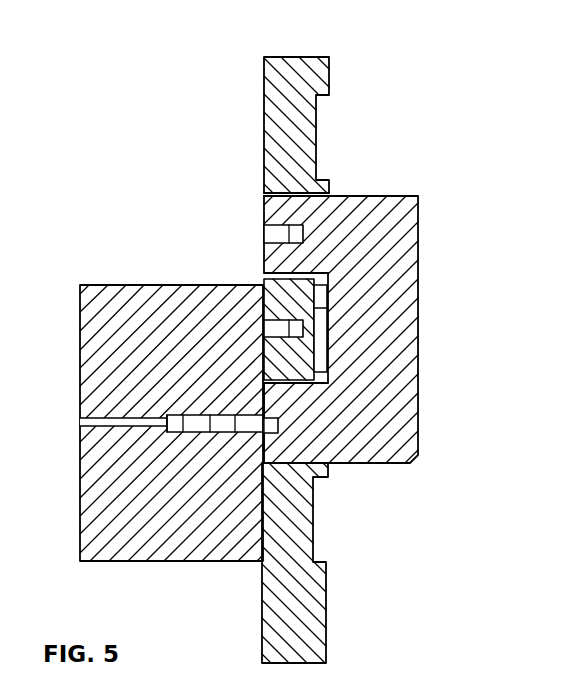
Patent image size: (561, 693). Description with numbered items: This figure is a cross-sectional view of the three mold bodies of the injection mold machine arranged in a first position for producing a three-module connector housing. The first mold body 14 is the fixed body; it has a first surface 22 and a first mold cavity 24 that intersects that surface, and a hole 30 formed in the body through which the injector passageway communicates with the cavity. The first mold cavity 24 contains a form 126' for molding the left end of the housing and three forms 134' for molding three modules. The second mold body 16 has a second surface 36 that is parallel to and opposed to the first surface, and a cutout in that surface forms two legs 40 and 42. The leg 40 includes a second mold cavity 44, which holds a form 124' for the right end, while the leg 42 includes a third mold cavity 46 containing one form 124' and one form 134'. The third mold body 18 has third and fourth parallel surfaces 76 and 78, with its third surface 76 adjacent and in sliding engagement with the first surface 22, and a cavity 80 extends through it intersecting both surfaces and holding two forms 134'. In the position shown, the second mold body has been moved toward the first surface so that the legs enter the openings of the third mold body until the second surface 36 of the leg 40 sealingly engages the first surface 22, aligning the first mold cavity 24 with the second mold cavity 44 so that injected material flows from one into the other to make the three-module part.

The first mold body 14 is at (80, 321).
The second mold body 16 is at (418, 240).
The third mold body 18 is at (313, 57).
The first surface 22 is at (262, 533).
The first mold cavity 24 is at (183, 415).
The hole 30 is at (80, 432).
The second surface 36 is at (260, 202).
The leg 40 is at (292, 442).
The leg 42 is at (298, 207).
The second mold cavity 44 is at (262, 433).
The third mold cavity 46 is at (262, 237).
The third surface 76 is at (262, 283).
The fourth surface 78 is at (328, 308).
The third mold cavity 80 is at (305, 327).
The form 124' is at (332, 332).
The form 126' is at (165, 455).
The form 134' is at (282, 314).